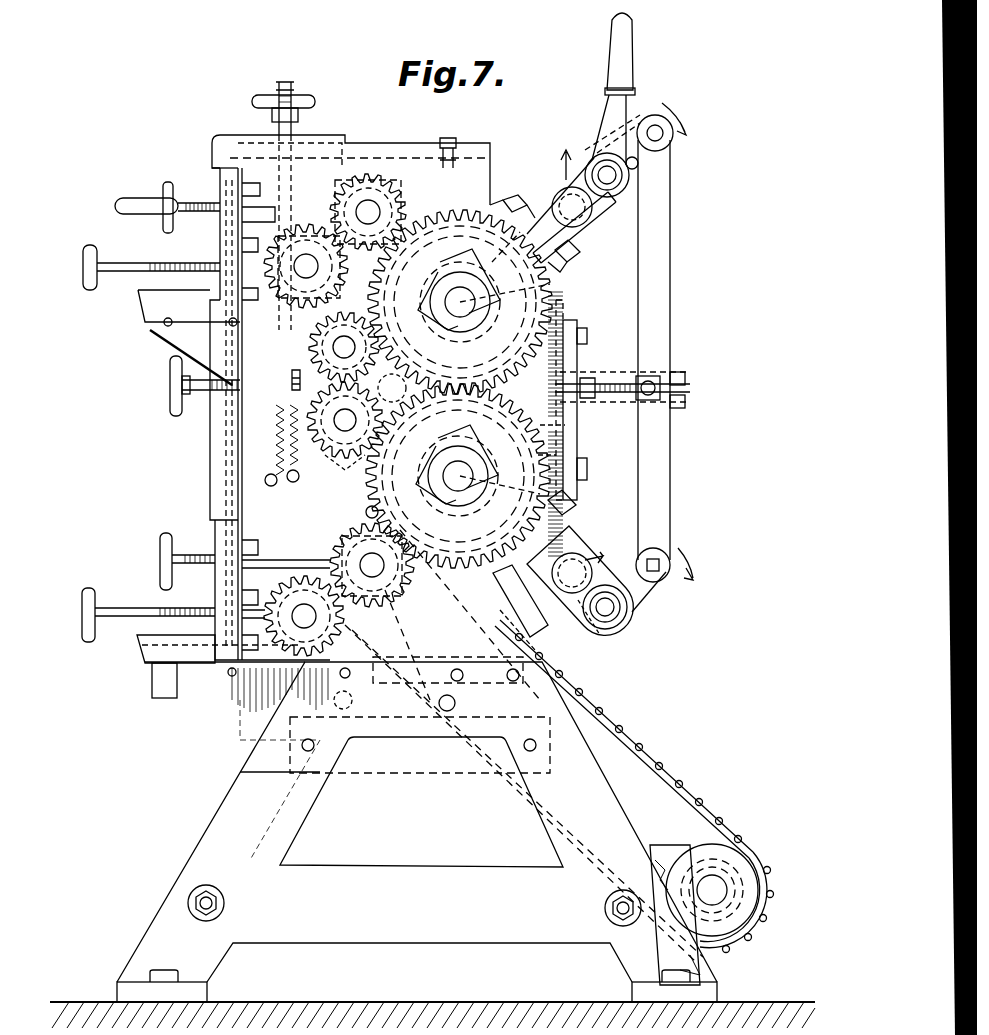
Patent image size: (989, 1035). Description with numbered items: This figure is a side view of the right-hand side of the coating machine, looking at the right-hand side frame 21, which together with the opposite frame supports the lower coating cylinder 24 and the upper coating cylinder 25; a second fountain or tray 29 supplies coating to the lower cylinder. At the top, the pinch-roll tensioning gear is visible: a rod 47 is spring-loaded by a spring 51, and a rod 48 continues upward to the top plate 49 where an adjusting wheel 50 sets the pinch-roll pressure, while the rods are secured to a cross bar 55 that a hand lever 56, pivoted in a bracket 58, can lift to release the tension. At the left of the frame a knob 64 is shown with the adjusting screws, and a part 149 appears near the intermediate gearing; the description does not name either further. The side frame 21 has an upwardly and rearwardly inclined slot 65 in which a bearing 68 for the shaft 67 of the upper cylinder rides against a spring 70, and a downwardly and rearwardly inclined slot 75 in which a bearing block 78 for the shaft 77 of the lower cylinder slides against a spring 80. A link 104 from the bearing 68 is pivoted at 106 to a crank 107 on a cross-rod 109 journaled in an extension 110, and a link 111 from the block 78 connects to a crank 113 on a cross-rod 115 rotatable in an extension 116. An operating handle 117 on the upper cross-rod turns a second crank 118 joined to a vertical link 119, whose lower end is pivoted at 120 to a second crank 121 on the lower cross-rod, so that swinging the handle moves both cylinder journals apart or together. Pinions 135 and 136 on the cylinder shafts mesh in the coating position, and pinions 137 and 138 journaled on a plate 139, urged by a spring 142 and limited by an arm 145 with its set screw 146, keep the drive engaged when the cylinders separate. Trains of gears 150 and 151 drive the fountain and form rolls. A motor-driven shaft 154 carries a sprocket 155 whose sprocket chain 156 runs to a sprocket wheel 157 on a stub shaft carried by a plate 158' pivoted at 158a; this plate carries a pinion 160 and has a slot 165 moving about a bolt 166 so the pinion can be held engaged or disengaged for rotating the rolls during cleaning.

The right-hand side frame 21 is at (225, 830).
The lower coating cylinder 24 is at (570, 492).
The upper coating cylinder 25 is at (570, 305).
The second fountain or tray 29 is at (165, 645).
The rod 47 is at (175, 358).
The rod 48 is at (247, 223).
The top plate 49 is at (404, 135).
The adjusting wheel 50 is at (270, 100).
The spring 51 is at (210, 455).
The cross bar 55 is at (252, 178).
The hand lever 56 is at (140, 200).
The bracket 58 is at (222, 142).
The knob 64 is at (172, 392).
The upwardly and rearwardly inclined slot 65 is at (494, 206).
The shaft 67 is at (572, 285).
The bearing 68 is at (580, 336).
The spring 70 is at (450, 286).
The downwardly and rearwardly inclined slot 75 is at (560, 447).
The shaft 77 is at (566, 512).
The bearing block 78 is at (572, 430).
The spring 80 is at (512, 416).
The link 104 is at (578, 240).
The pivotal connection 106 is at (587, 214).
The crank 107 is at (580, 195).
The cross-rod 109 is at (612, 180).
The extension 110 is at (645, 225).
The link 111 is at (562, 557).
The crank 113 is at (590, 625).
The cross-rod 115 is at (625, 615).
The extension 116 is at (532, 598).
The operating handle 117 is at (625, 45).
The second crank 118 is at (635, 136).
The link 119 is at (660, 322).
The pivotal connection 120 is at (663, 558).
The second crank 121 is at (660, 596).
The pinion 135 is at (572, 357).
The pinion 136 is at (582, 470).
The pinion 137 is at (330, 360).
The pinion 138 is at (320, 462).
The plate 139 is at (272, 440).
The spring 142 is at (292, 395).
The arm 145 is at (672, 372).
The set screw 146 is at (190, 345).
The pawl 149 is at (332, 470).
The train of gears 150 is at (421, 184).
The train of gears 151 is at (301, 642).
The shaft 154 is at (720, 888).
The sprocket 155 is at (703, 850).
The sprocket chain 156 is at (618, 734).
The sprocket wheel 157 is at (468, 597).
The plate 158' is at (524, 794).
The pivot 158a is at (470, 703).
The pinion 160 is at (432, 640).
The slot 165 is at (340, 530).
The bolt 166 is at (368, 505).